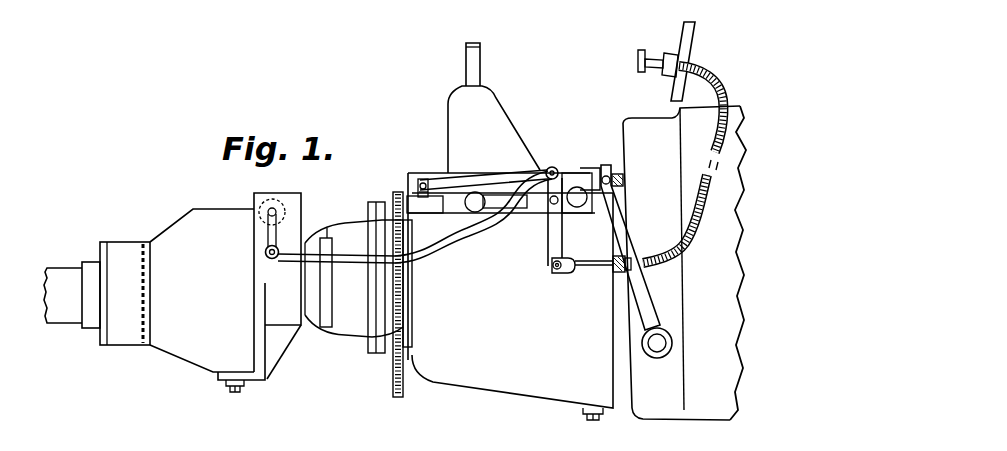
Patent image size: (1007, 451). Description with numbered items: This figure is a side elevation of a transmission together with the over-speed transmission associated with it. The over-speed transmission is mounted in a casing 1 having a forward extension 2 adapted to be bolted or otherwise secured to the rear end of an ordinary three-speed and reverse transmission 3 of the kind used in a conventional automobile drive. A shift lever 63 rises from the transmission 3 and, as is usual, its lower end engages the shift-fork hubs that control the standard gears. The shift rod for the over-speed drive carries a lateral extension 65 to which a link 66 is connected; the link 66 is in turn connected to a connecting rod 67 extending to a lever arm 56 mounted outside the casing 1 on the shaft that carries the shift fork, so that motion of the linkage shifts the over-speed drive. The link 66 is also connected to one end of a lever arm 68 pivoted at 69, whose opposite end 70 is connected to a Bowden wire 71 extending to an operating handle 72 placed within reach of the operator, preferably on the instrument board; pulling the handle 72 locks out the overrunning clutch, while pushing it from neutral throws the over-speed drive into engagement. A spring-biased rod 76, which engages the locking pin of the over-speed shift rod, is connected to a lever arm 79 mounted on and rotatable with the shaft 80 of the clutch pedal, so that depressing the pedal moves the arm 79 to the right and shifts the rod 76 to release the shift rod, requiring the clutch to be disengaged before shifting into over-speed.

The casing 1 is at (213, 215).
The forward extension 2 is at (350, 230).
The three-speed and reverse transmission 3 is at (548, 390).
The lever arm 56 is at (268, 239).
The shift lever 63 is at (476, 58).
The lateral extension 65 is at (423, 180).
The link 66 is at (477, 180).
The connecting rod 67 is at (472, 231).
The lever arm 68 is at (550, 244).
The pivot 69 is at (551, 204).
The end of lever arm 70 is at (554, 272).
The Bowden wire 71 is at (590, 266).
The operating handle 72 is at (645, 50).
The rod 76 is at (595, 168).
The lever arm 79 is at (625, 246).
The shaft of the clutch pedal 80 is at (657, 352).